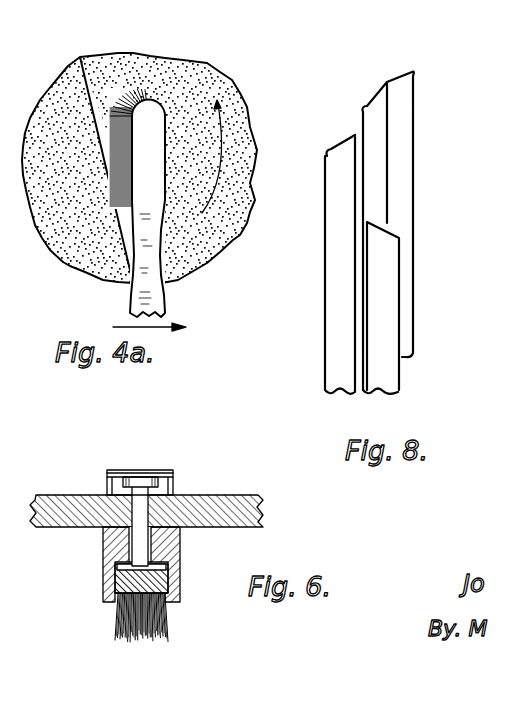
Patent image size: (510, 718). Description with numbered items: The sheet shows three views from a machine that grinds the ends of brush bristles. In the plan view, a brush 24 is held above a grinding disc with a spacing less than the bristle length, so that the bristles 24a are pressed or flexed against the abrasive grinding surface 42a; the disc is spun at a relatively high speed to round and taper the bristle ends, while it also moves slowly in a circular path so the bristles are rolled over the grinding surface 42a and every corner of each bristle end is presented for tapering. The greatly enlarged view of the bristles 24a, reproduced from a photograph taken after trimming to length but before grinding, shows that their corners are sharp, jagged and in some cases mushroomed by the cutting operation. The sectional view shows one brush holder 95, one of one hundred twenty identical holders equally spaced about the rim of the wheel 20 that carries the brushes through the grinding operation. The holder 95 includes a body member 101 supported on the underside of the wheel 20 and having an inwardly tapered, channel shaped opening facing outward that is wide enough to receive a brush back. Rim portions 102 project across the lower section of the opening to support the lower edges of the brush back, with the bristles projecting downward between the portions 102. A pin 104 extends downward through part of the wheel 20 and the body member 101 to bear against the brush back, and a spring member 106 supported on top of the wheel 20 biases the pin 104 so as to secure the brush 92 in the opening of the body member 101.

In FIG. 6, the wheel 20 is at (233, 501).
In FIG. 4A, the brush 24 is at (164, 298).
In FIG. 4A, the bristles 24a is at (110, 137).
In FIG. 8, the bristles 24a is at (407, 159).
In FIG. 4A, the grinding surface 42a is at (218, 90).
In FIG. 6, the brush 92 is at (171, 584).
In FIG. 6, the brush holder 95 is at (101, 565).
In FIG. 6, the body member 101 is at (180, 553).
In FIG. 6, the rim portions 102 is at (118, 603).
In FIG. 6, the pin 104 is at (142, 507).
In FIG. 6, the spring member 106 is at (117, 470).